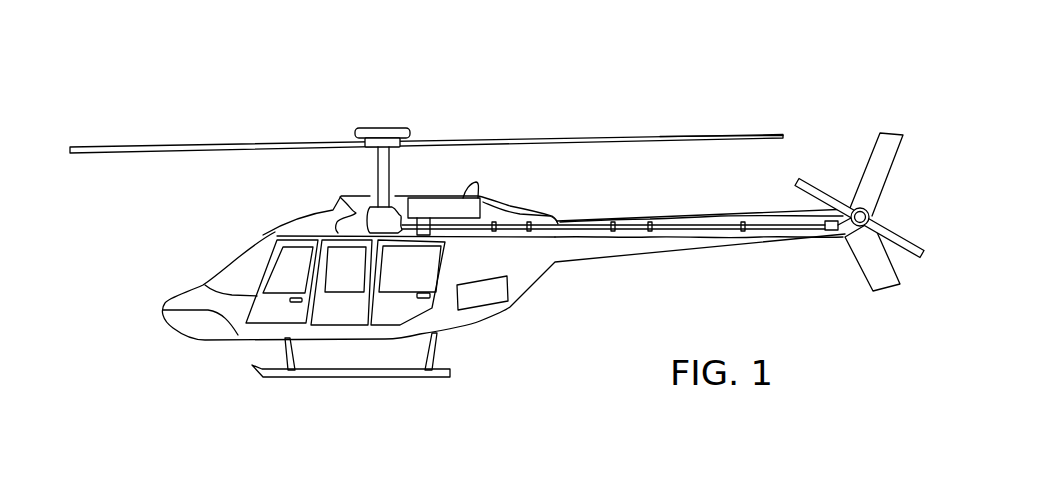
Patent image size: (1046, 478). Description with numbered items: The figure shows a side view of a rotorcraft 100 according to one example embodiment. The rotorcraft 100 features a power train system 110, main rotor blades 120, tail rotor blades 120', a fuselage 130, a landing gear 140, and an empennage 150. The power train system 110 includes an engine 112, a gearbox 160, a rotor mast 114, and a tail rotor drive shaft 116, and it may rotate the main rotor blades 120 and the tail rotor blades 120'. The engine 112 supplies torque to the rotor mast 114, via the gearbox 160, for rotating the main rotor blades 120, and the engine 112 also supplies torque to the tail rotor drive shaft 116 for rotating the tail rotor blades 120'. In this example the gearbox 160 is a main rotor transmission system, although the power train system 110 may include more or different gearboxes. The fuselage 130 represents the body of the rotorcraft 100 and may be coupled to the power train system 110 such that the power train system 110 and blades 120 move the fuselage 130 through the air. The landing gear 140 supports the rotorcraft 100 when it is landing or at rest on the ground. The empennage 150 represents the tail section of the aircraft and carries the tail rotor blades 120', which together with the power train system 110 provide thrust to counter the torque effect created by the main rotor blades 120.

The rotorcraft 100 is at (245, 73).
The power train system 110 is at (402, 116).
The engine 112 is at (483, 208).
The rotor mast 114 is at (378, 180).
The tail rotor drive shaft 116 is at (700, 225).
The main rotor blades 120 is at (426, 119).
The tail rotor blades 120' is at (859, 199).
The fuselage 130 is at (480, 320).
The landing gear 140 is at (277, 376).
The empennage 150 is at (635, 254).
The gearbox 160 is at (363, 223).